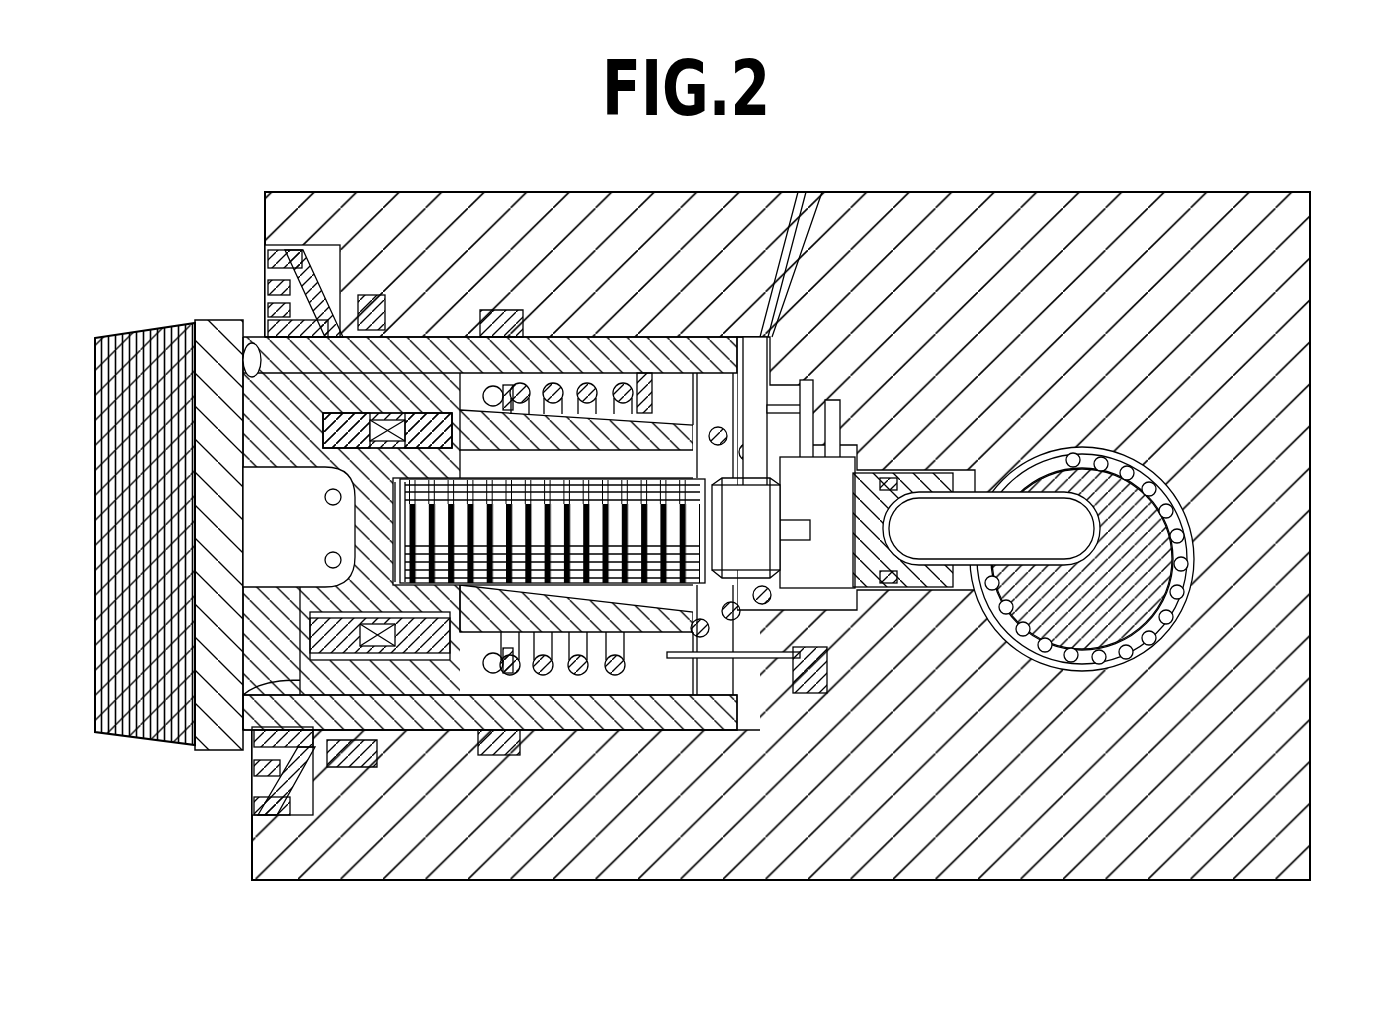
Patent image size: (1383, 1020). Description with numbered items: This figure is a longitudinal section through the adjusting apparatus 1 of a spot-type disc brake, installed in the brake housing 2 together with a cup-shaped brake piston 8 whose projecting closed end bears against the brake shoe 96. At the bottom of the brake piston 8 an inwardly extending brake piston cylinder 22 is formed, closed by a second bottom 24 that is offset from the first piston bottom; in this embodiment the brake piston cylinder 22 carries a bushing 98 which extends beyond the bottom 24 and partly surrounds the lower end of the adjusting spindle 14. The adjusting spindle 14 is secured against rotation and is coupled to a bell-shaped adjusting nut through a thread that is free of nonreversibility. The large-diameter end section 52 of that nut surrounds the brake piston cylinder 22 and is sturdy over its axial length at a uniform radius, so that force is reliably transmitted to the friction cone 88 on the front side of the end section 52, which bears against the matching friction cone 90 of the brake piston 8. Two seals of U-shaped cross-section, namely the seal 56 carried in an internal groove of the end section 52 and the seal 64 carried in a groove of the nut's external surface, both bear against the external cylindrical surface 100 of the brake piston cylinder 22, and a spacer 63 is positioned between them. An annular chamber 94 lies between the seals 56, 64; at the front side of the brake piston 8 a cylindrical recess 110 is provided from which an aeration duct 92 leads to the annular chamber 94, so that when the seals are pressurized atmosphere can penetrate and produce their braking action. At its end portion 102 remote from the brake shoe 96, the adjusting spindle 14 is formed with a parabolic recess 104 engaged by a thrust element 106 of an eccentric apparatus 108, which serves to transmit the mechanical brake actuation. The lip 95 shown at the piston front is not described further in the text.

The adjusting apparatus 1 is at (835, 409).
The brake housing 2 is at (1018, 228).
The brake piston 8 is at (540, 727).
The adjusting spindle 14 is at (582, 490).
The brake piston cylinder 22 is at (300, 592).
The second bottom 24 is at (346, 549).
The end section of the adjusting nut 52 is at (392, 412).
The seal of U-shaped cross-section 56 is at (350, 413).
The spacer 63 is at (405, 660).
The seal of U-shaped cross-section 64 is at (420, 420).
The friction cone 88 is at (247, 777).
The friction cone 90 is at (248, 735).
The aeration duct 92 is at (326, 498).
The annular chamber 94 is at (452, 445).
The lip 95 is at (252, 342).
The brake shoe 96 is at (124, 336).
The bushing 98 is at (462, 760).
The external cylindrical surface 100 is at (227, 742).
The end portion 102 is at (826, 564).
The parabolic recess 104 is at (940, 577).
The thrust element 106 is at (1010, 540).
The eccentric apparatus 108 is at (1168, 578).
The cylindrical recess 110 is at (255, 527).